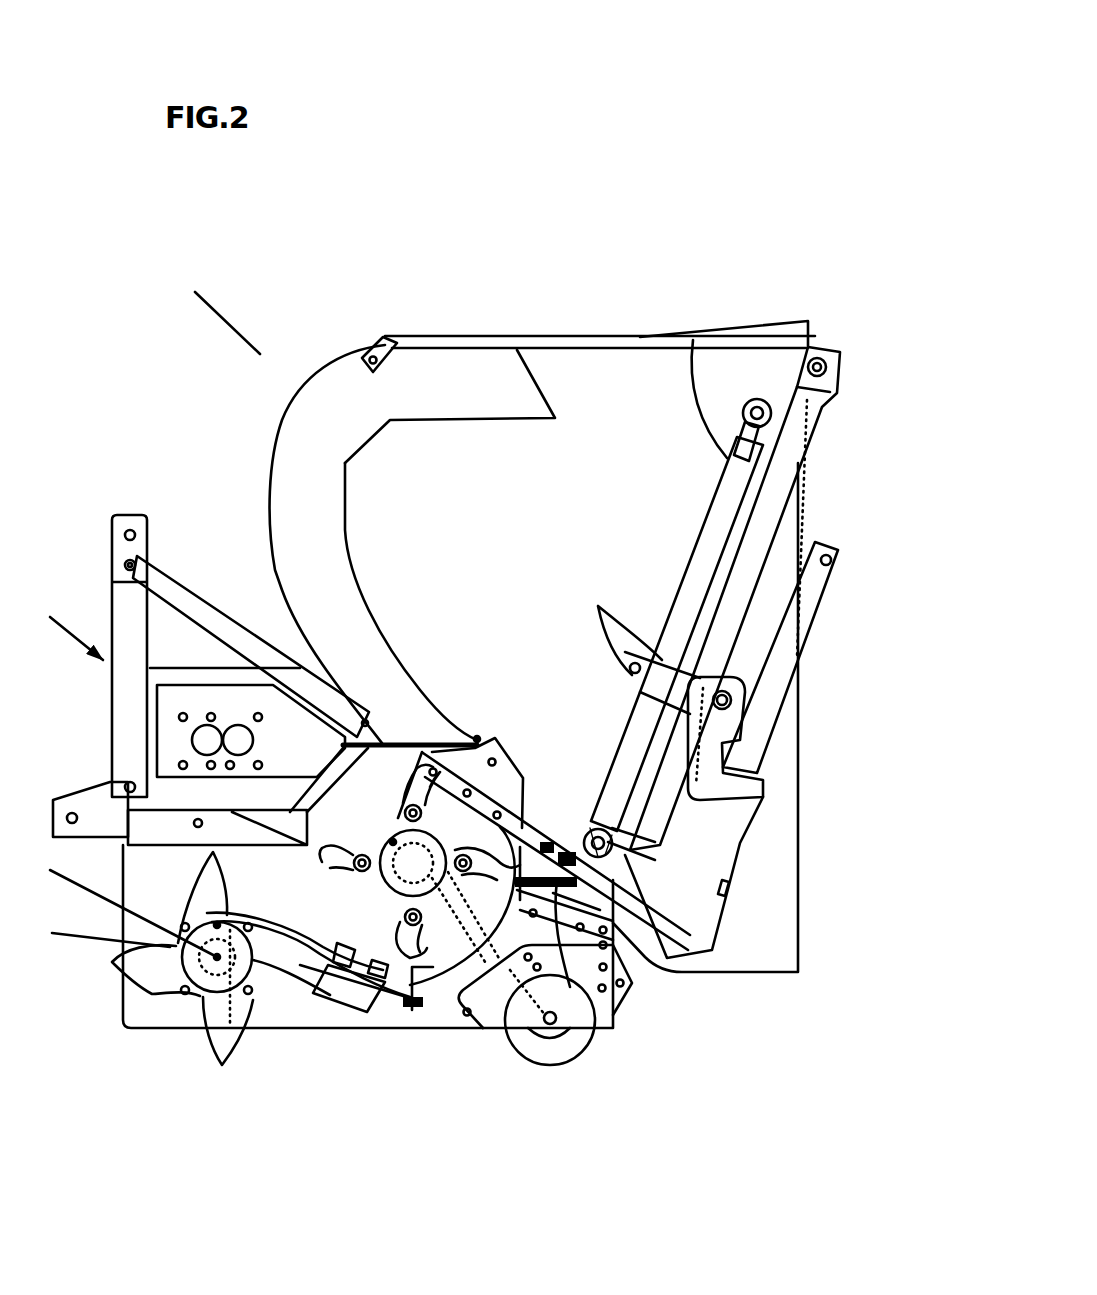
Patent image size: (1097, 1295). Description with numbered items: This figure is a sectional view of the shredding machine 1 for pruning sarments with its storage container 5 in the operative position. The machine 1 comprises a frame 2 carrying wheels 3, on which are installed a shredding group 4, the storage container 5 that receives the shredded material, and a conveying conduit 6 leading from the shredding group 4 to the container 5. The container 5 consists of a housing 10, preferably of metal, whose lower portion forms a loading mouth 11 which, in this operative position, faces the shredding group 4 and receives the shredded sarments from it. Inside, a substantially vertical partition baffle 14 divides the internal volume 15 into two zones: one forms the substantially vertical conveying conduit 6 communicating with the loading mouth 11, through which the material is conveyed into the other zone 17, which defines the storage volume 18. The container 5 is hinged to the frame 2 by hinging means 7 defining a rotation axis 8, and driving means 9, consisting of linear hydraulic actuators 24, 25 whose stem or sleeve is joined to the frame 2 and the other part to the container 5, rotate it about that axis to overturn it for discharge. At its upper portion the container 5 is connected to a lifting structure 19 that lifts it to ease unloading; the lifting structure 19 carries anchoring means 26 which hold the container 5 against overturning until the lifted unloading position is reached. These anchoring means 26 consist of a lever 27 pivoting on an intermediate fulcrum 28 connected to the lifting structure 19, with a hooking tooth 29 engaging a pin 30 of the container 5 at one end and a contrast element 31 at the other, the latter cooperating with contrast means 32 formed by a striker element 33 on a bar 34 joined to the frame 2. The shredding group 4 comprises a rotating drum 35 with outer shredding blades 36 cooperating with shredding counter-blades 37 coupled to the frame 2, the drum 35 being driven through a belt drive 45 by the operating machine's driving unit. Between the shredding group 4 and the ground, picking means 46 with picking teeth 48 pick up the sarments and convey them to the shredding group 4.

The shredding machine 1 is at (486, 447).
The frame 2 is at (465, 739).
The wheels 3 is at (580, 1060).
The shredding group 4 is at (400, 958).
The storage container 5 is at (262, 356).
The conveying conduit 6 is at (310, 581).
The hinging means 7 is at (823, 333).
The rotation axis 8 is at (835, 352).
The driving means 9 is at (693, 340).
The housing 10 is at (318, 368).
The loading mouth 11 is at (420, 738).
The partition baffle 14 is at (350, 506).
The internal volume 15 is at (520, 490).
The zone 17 is at (585, 490).
The storage volume 18 is at (500, 578).
The lifting structure 19 is at (506, 612).
The linear hydraulic actuator 24 is at (677, 628).
The linear hydraulic actuator 25 is at (712, 490).
The anchoring means 26 is at (794, 707).
The lever 27 is at (624, 626).
The intermediate fulcrum 28 is at (740, 697).
The hooking tooth 29 is at (632, 656).
The pin 30 is at (628, 678).
The contrast element 31 is at (780, 778).
The contrast means 32 is at (831, 633).
The striker element 33 is at (838, 567).
The bar 34 is at (738, 843).
The rotating drum 35 is at (392, 891).
The shredding blades 36 is at (323, 863).
The shredding counter-blades 37 is at (385, 985).
The belt drive 45 is at (497, 957).
The picking means 46 is at (275, 1007).
The picking teeth 48 is at (240, 1053).